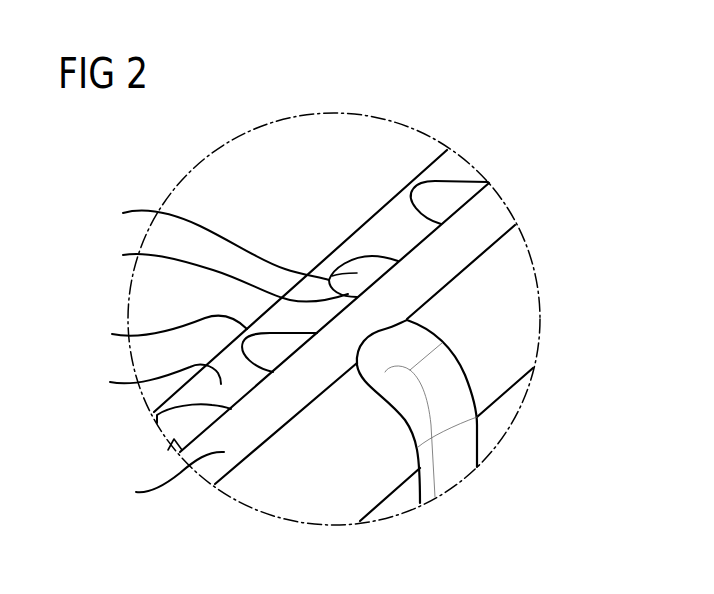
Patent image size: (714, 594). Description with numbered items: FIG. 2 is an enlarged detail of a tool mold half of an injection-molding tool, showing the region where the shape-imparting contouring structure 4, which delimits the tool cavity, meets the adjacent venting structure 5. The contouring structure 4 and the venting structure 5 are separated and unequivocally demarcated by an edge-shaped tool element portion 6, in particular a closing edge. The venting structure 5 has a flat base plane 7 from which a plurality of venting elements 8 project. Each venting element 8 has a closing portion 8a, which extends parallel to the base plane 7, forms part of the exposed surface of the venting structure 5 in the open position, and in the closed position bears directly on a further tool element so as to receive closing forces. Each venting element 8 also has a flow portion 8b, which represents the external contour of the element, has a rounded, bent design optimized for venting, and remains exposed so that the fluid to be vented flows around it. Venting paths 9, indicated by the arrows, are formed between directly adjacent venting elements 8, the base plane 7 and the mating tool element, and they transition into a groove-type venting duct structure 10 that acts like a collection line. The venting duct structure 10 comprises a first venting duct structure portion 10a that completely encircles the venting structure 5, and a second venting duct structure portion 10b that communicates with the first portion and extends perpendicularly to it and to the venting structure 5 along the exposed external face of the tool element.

The contouring structure 4 is at (267, 164).
The venting structure 5 is at (342, 233).
The venting paths 9 is at (405, 236).
The venting elements 8 is at (331, 257).
The closing portion 8a is at (211, 237).
The flow portion 8b is at (220, 271).
The tool element portion 6 is at (170, 334).
The base plane 7 is at (157, 384).
The venting duct structure 10 is at (251, 458).
The first venting duct structure portion 10a is at (158, 482).
The second venting duct structure portion 10b is at (447, 380).